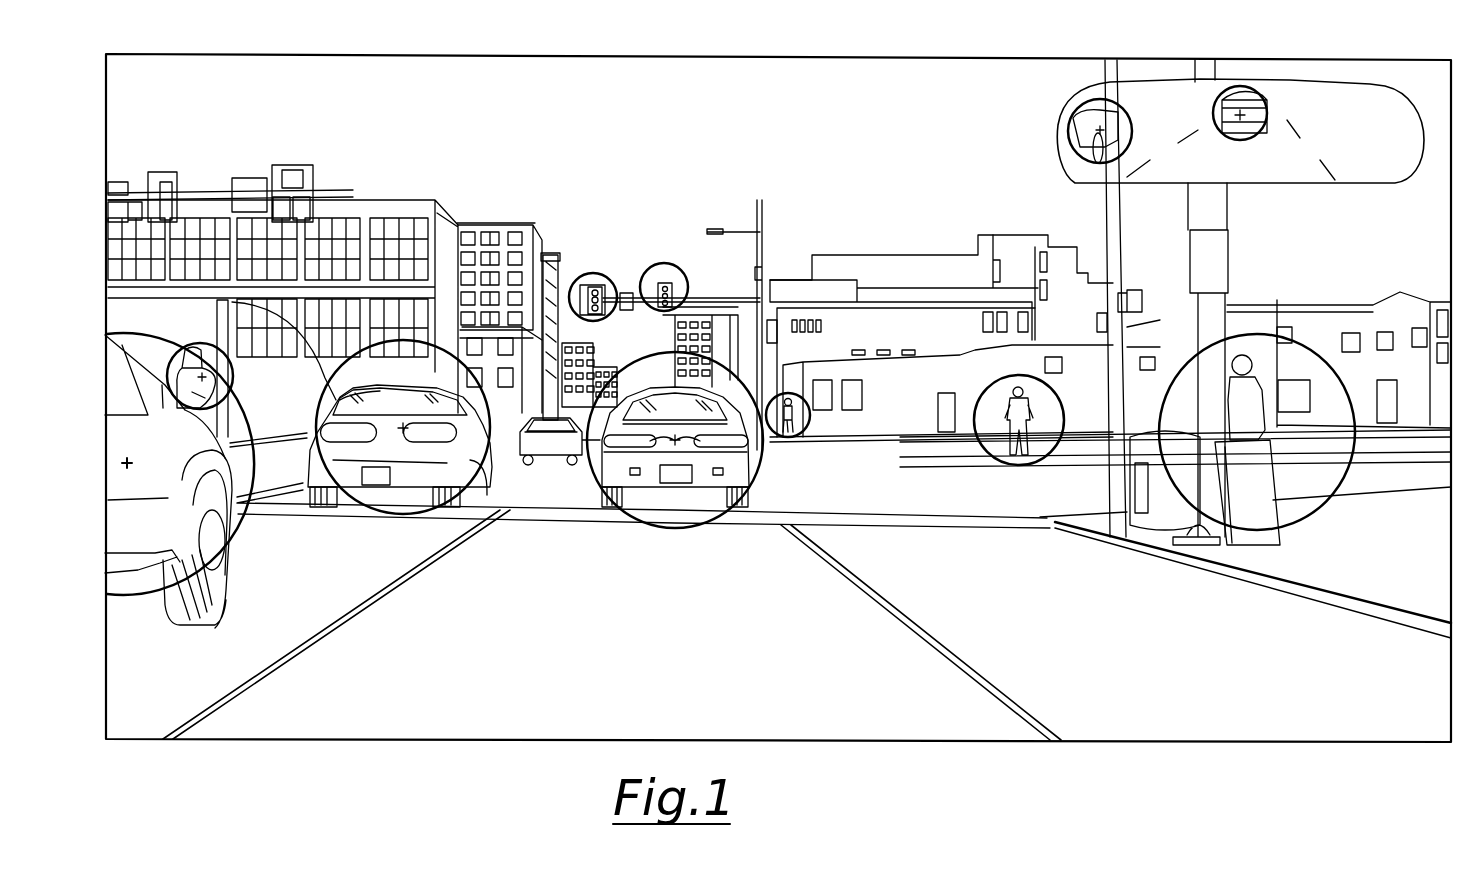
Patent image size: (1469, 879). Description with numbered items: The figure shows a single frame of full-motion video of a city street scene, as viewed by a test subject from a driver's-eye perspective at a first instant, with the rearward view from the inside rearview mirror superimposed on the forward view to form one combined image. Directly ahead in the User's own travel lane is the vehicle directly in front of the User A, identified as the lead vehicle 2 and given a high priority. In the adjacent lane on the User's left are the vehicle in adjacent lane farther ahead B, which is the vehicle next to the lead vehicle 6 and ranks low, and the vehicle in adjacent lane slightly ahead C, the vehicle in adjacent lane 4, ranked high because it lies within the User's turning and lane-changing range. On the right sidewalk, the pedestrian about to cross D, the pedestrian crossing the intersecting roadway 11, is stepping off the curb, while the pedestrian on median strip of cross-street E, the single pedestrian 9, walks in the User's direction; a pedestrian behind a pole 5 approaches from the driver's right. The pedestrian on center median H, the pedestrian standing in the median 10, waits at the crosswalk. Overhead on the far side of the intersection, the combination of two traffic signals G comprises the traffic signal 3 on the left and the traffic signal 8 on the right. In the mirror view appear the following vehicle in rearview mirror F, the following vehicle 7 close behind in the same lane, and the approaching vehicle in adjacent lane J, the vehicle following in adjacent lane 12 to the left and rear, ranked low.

The lead vehicle 2 is at (675, 483).
The traffic signal 3 is at (584, 270).
The vehicle in adjacent lane 4 is at (168, 507).
The pedestrian behind a pole 5 is at (1291, 467).
The vehicle next to the lead vehicle 6 is at (400, 471).
The following vehicle 7 is at (1239, 138).
The traffic signal 8 is at (669, 264).
The single pedestrian 9 is at (1006, 452).
The pedestrian standing in the median 10 is at (222, 362).
The pedestrian crossing the intersecting roadway 11 is at (811, 449).
The vehicle following in adjacent lane 12 is at (1063, 121).
The vehicle directly in front of the User A is at (626, 513).
The vehicle in adjacent lane farther ahead B is at (440, 505).
The vehicle in adjacent lane slightly ahead C is at (218, 560).
The pedestrian about to cross D is at (812, 418).
The pedestrian on median strip of cross-street E is at (1040, 459).
The following vehicle in rearview mirror F is at (1268, 110).
The combination of two traffic signals G is at (647, 271).
The pedestrian on center median H is at (233, 376).
The approaching vehicle in adjacent lane J is at (1130, 110).